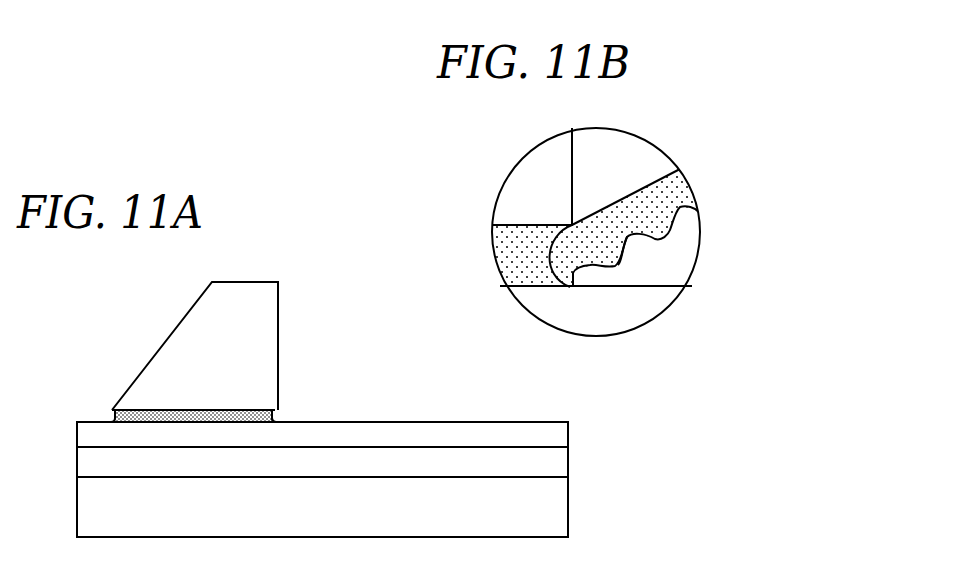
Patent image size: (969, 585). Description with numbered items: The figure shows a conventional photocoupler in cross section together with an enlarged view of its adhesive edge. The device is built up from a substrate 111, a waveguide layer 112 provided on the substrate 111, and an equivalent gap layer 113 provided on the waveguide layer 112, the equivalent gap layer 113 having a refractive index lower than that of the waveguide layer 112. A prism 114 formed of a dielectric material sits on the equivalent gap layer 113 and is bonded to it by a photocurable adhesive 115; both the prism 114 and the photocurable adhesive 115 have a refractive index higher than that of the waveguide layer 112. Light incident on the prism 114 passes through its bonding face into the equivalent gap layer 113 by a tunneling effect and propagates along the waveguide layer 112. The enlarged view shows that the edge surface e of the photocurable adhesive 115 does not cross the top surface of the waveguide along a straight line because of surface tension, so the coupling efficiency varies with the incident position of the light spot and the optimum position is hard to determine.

In FIG. 11A, the substrate 111 is at (563, 513).
In FIG. 11A, the waveguide layer 112 is at (565, 462).
In FIG. 11A, the equivalent gap layer 113 is at (565, 433).
In FIG. 11B, the equivalent gap layer 113 is at (643, 312).
In FIG. 11A, the prism 114 is at (268, 330).
In FIG. 11B, the prism 114 is at (522, 182).
In FIG. 11A, the photocurable adhesive 115 is at (118, 414).
In FIG. 11B, the photocurable adhesive 115 is at (683, 193).
In FIG. 11A, the edge surface e is at (283, 415).
In FIG. 11B, the edge surface e is at (627, 258).